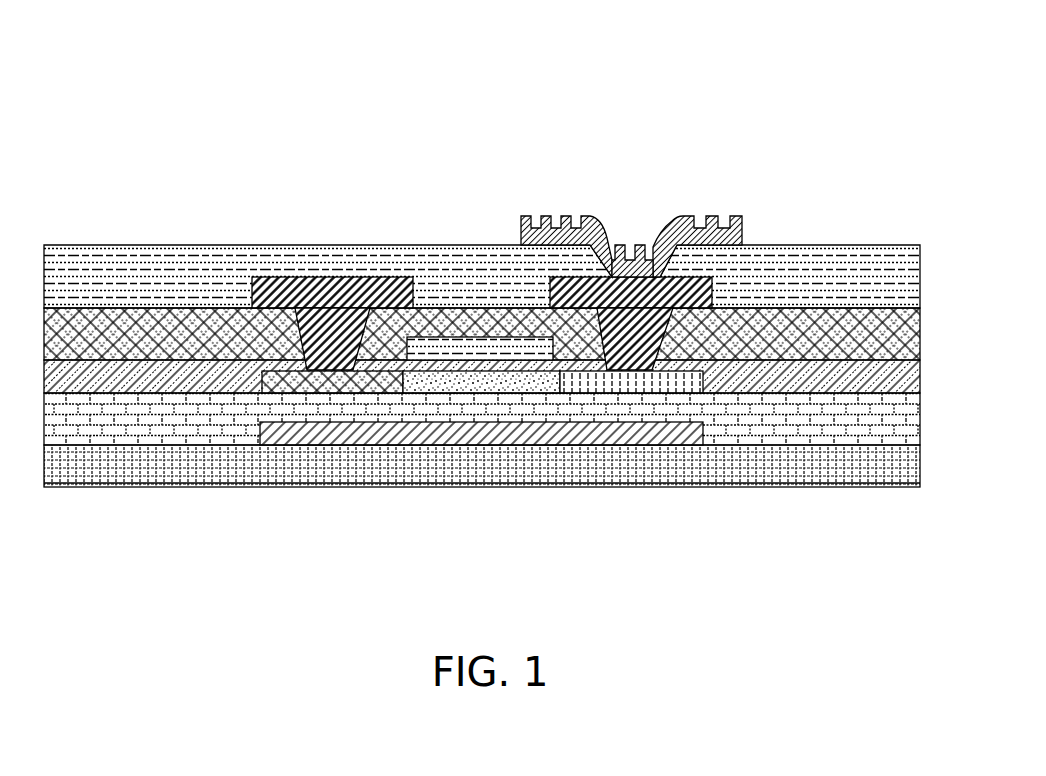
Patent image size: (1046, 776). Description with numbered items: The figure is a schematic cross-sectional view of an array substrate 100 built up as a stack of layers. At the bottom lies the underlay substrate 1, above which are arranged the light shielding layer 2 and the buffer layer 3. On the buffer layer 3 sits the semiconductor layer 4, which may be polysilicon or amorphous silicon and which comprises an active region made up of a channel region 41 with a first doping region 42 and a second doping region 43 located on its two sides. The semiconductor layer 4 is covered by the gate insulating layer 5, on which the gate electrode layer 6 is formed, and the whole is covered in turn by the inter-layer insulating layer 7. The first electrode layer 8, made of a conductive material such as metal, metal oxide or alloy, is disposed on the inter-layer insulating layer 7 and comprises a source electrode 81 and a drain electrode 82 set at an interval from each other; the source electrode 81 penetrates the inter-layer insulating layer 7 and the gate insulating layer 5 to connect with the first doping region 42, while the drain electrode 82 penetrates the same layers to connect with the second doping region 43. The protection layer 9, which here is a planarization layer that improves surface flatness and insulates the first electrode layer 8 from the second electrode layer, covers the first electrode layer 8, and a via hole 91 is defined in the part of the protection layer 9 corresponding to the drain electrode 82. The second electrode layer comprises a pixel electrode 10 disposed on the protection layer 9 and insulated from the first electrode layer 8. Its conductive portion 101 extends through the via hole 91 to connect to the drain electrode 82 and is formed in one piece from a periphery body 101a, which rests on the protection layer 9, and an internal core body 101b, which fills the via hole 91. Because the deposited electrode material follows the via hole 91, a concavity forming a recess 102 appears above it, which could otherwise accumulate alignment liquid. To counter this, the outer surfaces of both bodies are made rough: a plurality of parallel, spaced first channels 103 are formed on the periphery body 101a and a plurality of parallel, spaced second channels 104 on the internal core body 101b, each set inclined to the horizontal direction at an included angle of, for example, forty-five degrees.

The array substrate 100 is at (118, 52).
The underlay substrate 1 is at (920, 473).
The light shielding layer 2 is at (683, 433).
The buffer layer 3 is at (900, 422).
The semiconductor layer 4 is at (482, 457).
The channel region 41 is at (483, 380).
The first doping region 42 is at (345, 347).
The second doping region 43 is at (631, 446).
The gate insulating layer 5 is at (903, 373).
The gate electrode layer 6 is at (460, 347).
The inter-layer insulating layer 7 is at (920, 337).
The first electrode layer 8 is at (207, 130).
The source electrode 81 is at (343, 337).
The drain electrode 82 is at (936, 318).
The protection layer 9 is at (862, 257).
The via hole 91 is at (666, 264).
The pixel electrode 10 is at (534, 172).
The conductive portion 101 is at (312, 130).
The periphery body 101a is at (562, 200).
The internal core body 101b is at (525, 225).
The recess 102 is at (628, 227).
The first channels 103 is at (553, 215).
The second channels 104 is at (735, 225).